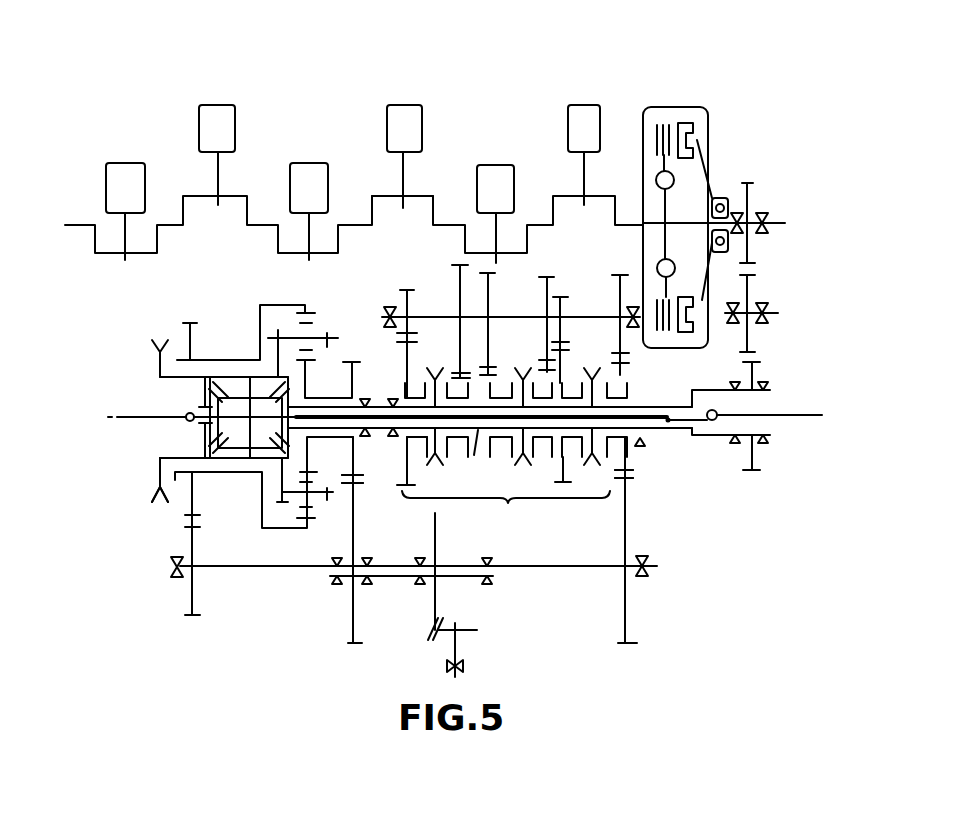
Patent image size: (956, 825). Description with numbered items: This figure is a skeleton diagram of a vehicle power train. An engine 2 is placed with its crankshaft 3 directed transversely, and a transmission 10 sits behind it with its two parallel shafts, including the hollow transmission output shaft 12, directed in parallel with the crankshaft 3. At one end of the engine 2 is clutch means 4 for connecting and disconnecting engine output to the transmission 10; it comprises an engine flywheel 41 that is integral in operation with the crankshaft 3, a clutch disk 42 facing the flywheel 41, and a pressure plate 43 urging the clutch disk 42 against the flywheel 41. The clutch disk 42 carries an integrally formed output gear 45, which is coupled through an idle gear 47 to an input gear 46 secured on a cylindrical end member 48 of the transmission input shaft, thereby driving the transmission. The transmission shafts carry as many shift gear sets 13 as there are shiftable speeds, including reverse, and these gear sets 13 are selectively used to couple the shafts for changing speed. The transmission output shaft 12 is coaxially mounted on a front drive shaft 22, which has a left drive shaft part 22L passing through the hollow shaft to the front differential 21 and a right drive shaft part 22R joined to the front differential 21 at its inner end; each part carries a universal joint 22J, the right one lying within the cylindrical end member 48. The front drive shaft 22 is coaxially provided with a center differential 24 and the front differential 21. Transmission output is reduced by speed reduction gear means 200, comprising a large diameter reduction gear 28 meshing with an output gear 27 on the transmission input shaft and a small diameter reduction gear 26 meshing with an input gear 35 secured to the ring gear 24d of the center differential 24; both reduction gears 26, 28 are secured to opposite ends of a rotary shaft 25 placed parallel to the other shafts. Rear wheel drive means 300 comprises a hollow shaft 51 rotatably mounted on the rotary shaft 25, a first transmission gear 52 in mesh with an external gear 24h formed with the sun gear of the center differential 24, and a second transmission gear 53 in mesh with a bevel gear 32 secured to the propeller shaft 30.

The engine 2 is at (467, 138).
The crankshaft 3 is at (417, 200).
The clutch means 4 is at (731, 249).
The transmission 10 is at (546, 506).
The transmission output shaft 12 is at (510, 312).
The shift gear sets 13 is at (506, 509).
The front differential 21 is at (243, 375).
The front drive shaft 22 is at (208, 425).
The left drive shaft part 22L is at (128, 412).
The right drive shaft part 22R is at (803, 418).
The universal joint 22J is at (187, 422).
The center differential 24 is at (328, 318).
The ring gear 24d is at (255, 497).
The external gear 24h is at (410, 455).
The rotary shaft 25 is at (537, 570).
The small diameter reduction gear 26 is at (190, 545).
The output gear 27 is at (628, 456).
The large diameter reduction gear 28 is at (627, 528).
The propeller shaft 30 is at (457, 648).
The bevel gear 32 is at (465, 628).
The input gear 35 is at (188, 500).
The engine flywheel 41 is at (653, 107).
The clutch disk 42 is at (658, 184).
The pressure plate 43 is at (690, 137).
The output gear 45 is at (750, 187).
The input gear 46 is at (767, 372).
The idle gear 47 is at (752, 318).
The cylindrical end member 48 is at (700, 385).
The hollow shaft 51 is at (371, 544).
The first transmission gear 52 is at (442, 518).
The second transmission gear 53 is at (440, 532).
The speed reduction gear means 200 is at (592, 583).
The rear wheel drive means 300 is at (343, 617).